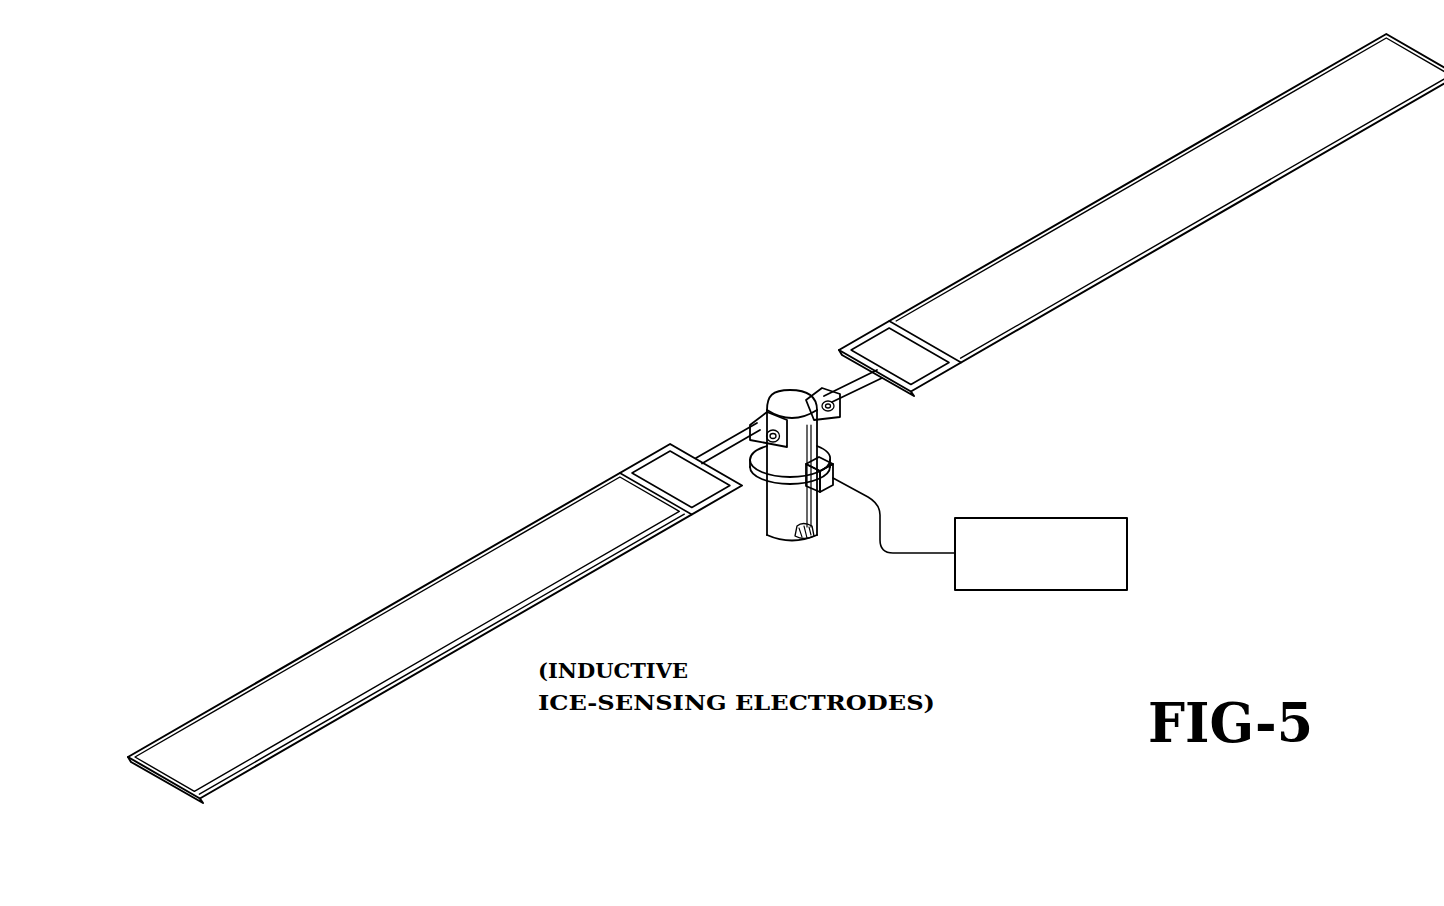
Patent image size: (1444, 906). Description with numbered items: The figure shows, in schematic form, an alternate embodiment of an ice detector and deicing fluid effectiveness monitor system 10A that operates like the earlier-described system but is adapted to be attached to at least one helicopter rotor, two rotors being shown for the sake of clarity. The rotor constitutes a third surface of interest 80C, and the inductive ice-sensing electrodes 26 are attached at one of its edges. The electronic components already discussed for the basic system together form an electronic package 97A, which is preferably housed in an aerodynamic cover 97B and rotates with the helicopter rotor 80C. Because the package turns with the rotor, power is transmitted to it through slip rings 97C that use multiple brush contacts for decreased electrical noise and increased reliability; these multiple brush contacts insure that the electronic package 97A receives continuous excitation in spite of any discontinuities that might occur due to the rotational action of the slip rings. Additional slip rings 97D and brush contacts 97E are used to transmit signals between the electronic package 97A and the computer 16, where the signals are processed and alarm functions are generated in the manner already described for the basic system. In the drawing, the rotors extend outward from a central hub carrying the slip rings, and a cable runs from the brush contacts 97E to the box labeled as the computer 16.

The ice detector and deicing fluid effectiveness monitor system 10A is at (458, 352).
The third surface of interest 80C is at (385, 636).
The inductive ice-sensing electrodes 26 is at (430, 658).
The electronic package 97A is at (655, 468).
The aerodynamic cover 97B is at (712, 492).
The slip rings 97C is at (752, 414).
The additional slip rings 97D is at (828, 448).
The brush contacts 97E is at (835, 472).
The computer 16 is at (1038, 518).